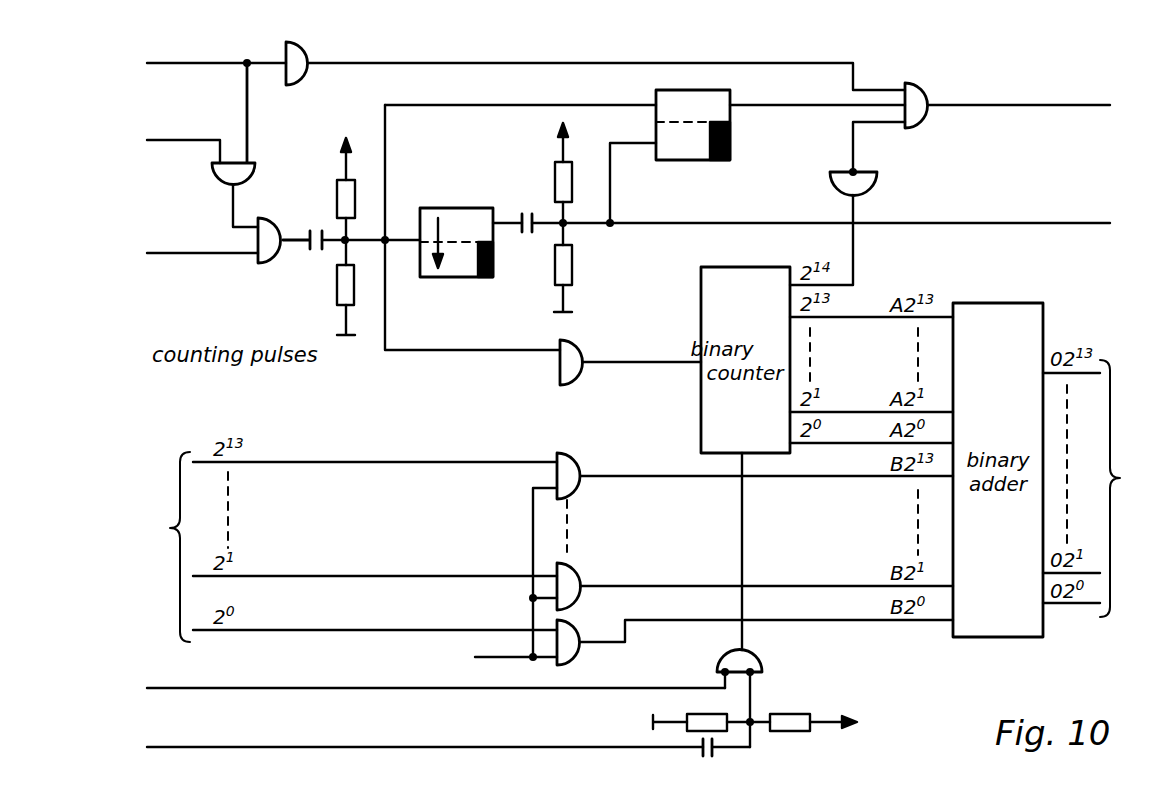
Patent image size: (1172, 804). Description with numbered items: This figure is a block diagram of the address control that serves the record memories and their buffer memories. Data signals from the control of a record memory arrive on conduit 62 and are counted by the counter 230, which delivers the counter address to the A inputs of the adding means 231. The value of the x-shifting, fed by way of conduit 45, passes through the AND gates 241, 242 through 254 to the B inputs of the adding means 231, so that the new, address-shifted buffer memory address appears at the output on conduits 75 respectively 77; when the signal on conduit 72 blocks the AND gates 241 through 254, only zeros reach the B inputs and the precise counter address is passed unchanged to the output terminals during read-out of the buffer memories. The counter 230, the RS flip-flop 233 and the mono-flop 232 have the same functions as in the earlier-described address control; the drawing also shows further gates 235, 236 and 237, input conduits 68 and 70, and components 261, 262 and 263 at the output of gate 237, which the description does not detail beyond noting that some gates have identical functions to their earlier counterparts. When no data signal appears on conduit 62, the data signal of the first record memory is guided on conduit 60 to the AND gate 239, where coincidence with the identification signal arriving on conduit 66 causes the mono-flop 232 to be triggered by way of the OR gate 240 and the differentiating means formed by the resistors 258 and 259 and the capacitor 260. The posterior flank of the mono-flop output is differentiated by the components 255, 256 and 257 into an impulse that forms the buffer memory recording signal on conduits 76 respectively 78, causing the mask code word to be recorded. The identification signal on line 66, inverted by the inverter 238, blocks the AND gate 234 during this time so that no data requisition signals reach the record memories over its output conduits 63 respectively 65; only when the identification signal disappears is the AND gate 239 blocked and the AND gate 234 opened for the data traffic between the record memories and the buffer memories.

The conduit 45 is at (348, 547).
The conduit 60 is at (187, 140).
The conduit 62 is at (197, 255).
The output line 63 is at (955, 107).
The output line 65 is at (1019, 120).
The conduit 66 is at (223, 63).
The input line 68 is at (205, 747).
The input line 70 is at (200, 688).
The conduit 72 is at (470, 659).
The conduit 75 is at (1136, 488).
The conduit 76 is at (940, 224).
The conduit 77 is at (1136, 488).
The conduit 78 is at (860, 211).
The counter 230 is at (710, 407).
The adding means 231 is at (1015, 318).
The mono-flop 232 is at (460, 270).
The RS flip-flop 233 is at (660, 100).
The AND gate 234 is at (915, 100).
The gate 235 is at (870, 183).
The gate 236 is at (572, 358).
The gate 237 is at (740, 663).
The inverter 238 is at (300, 55).
The AND gate 239 is at (248, 170).
The OR gate 240 is at (270, 238).
The AND gate 241 is at (573, 655).
The AND gate 242 is at (575, 578).
The AND gate 254 is at (575, 468).
The differentiating component 255 is at (557, 185).
The differentiating component 256 is at (566, 268).
The differentiating component 257 is at (527, 232).
The resistor 258 is at (337, 200).
The resistor 259 is at (338, 288).
The capacitor 260 is at (312, 250).
The resistor 261 is at (790, 722).
The resistor 262 is at (697, 727).
The capacitor 263 is at (714, 753).